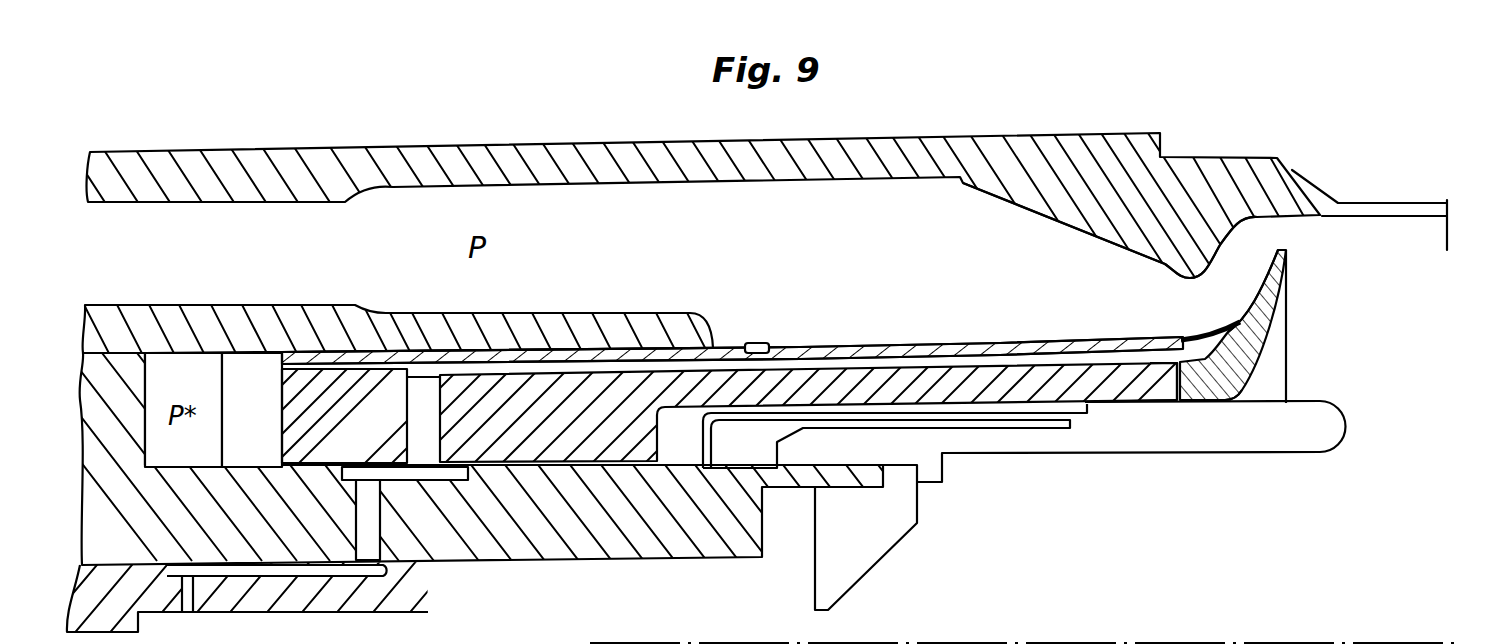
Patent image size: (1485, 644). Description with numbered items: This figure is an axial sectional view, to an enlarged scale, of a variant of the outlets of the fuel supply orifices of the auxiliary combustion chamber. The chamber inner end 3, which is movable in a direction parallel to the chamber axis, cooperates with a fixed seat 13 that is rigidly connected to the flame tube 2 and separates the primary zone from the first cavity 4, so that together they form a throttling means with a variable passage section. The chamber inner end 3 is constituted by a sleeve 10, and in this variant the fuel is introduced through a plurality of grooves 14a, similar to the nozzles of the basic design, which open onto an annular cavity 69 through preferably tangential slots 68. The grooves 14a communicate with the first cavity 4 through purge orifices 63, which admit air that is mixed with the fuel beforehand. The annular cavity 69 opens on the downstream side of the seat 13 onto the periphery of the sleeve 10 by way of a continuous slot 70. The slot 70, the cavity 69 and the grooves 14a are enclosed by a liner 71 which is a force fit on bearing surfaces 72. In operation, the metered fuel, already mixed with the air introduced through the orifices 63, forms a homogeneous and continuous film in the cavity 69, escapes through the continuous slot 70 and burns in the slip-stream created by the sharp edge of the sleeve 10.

The flame tube 2 is at (1380, 208).
The chamber inner end 3 is at (1287, 328).
The first cavity 4 is at (866, 204).
The sleeve 10 is at (1253, 365).
The fixed seat 13 is at (1200, 248).
The grooves 14a is at (983, 357).
The purge orifices 63 is at (757, 343).
The tangential slots 68 is at (1183, 367).
The annular cavity 69 is at (1223, 350).
The continuous slot 70 is at (1275, 306).
The liner 71 is at (847, 350).
The bearing surfaces 72 is at (325, 362).